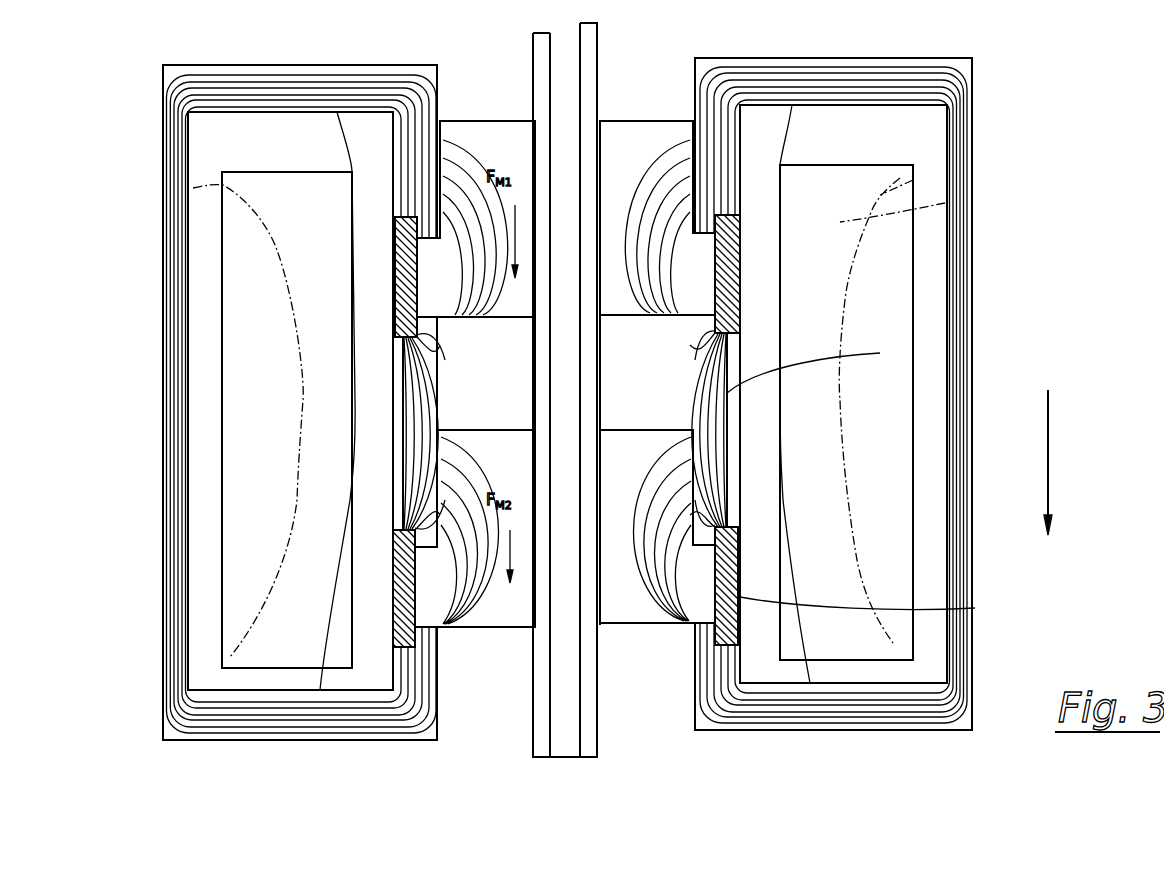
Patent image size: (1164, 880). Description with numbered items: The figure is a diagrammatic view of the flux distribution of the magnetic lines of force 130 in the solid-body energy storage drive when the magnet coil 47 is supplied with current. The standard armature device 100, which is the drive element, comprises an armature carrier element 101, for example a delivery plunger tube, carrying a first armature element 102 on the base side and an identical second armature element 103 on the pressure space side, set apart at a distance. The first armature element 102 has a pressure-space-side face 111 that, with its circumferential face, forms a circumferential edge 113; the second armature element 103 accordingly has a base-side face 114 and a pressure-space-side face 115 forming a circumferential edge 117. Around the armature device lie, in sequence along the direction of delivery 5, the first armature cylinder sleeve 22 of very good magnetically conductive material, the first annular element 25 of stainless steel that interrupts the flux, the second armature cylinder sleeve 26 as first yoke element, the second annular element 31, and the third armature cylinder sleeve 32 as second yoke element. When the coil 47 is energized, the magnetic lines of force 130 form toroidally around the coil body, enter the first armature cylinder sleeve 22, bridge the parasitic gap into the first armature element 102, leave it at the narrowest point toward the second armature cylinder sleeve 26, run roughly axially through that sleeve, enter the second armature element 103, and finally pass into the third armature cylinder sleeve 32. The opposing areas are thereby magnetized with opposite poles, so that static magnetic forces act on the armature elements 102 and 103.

The direction of delivery 5 is at (1065, 462).
The first armature cylinder sleeve 22 is at (713, 117).
The first annular element 25 is at (880, 215).
The second armature cylinder sleeve 26 is at (880, 353).
The second annular element 31 is at (975, 608).
The third armature cylinder sleeve 32 is at (697, 716).
The magnet coil 47 is at (895, 540).
The standard armature device 100 is at (620, 110).
The armature carrier element 101 is at (538, 60).
The first armature element 102 is at (497, 118).
The second armature element 103 is at (627, 445).
The face 111 is at (623, 318).
The circumferential edge 113 is at (436, 318).
The face 114 is at (497, 432).
The face 115 is at (645, 627).
The circumferential edge 117 is at (437, 628).
The magnetic lines of force 130 is at (970, 85).